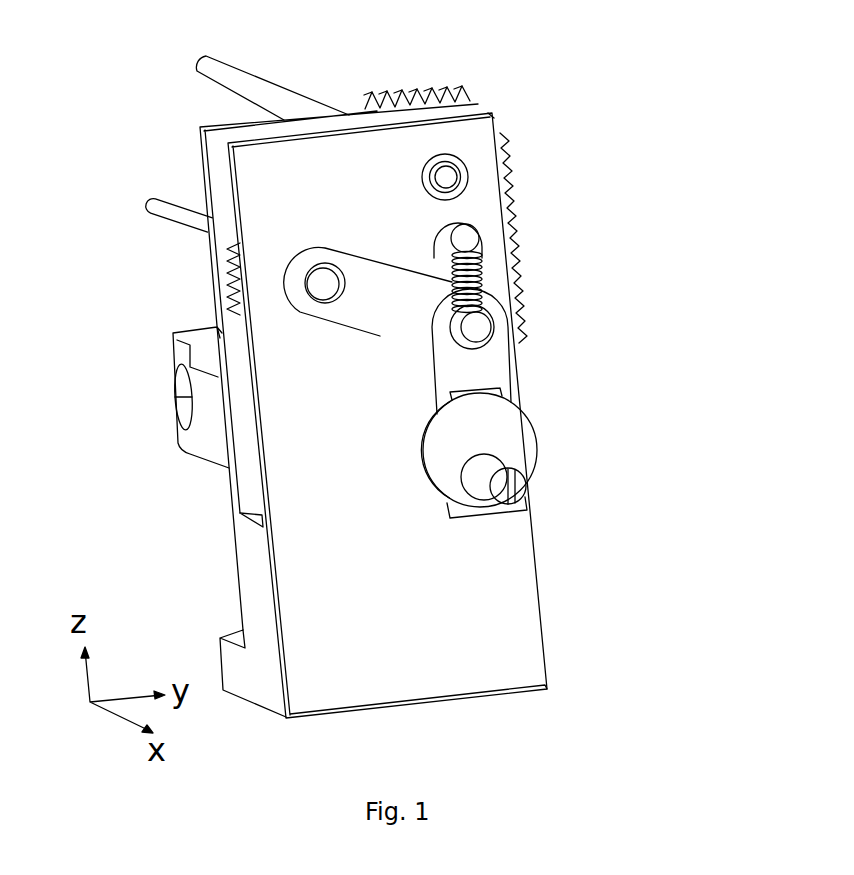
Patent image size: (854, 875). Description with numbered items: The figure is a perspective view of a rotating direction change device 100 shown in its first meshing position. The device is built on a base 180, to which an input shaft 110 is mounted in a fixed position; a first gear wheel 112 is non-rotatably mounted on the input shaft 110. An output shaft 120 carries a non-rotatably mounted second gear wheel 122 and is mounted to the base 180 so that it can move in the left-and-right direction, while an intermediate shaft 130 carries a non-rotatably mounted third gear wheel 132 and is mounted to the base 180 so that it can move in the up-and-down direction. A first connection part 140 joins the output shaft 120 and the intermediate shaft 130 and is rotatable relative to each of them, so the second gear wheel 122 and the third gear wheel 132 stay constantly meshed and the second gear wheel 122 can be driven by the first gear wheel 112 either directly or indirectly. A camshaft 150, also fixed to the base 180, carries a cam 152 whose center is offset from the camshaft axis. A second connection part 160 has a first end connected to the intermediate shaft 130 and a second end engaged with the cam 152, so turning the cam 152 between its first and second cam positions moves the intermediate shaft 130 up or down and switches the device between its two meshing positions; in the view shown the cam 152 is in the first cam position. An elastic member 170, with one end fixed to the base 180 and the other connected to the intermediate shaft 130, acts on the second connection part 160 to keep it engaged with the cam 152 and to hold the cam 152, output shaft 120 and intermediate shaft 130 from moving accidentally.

The rotating direction change device 100 is at (140, 134).
The input shaft 110 is at (268, 98).
The first gear wheel 112 is at (473, 107).
The output shaft 120 is at (190, 223).
The second gear wheel 122 is at (235, 288).
The intermediate shaft 130 is at (482, 328).
The third gear wheel 132 is at (530, 300).
The first connection part 140 is at (363, 272).
The camshaft 150 is at (522, 490).
The cam 152 is at (520, 430).
The second connection part 160 is at (492, 353).
The elastic member 170 is at (512, 258).
The base 180 is at (525, 595).